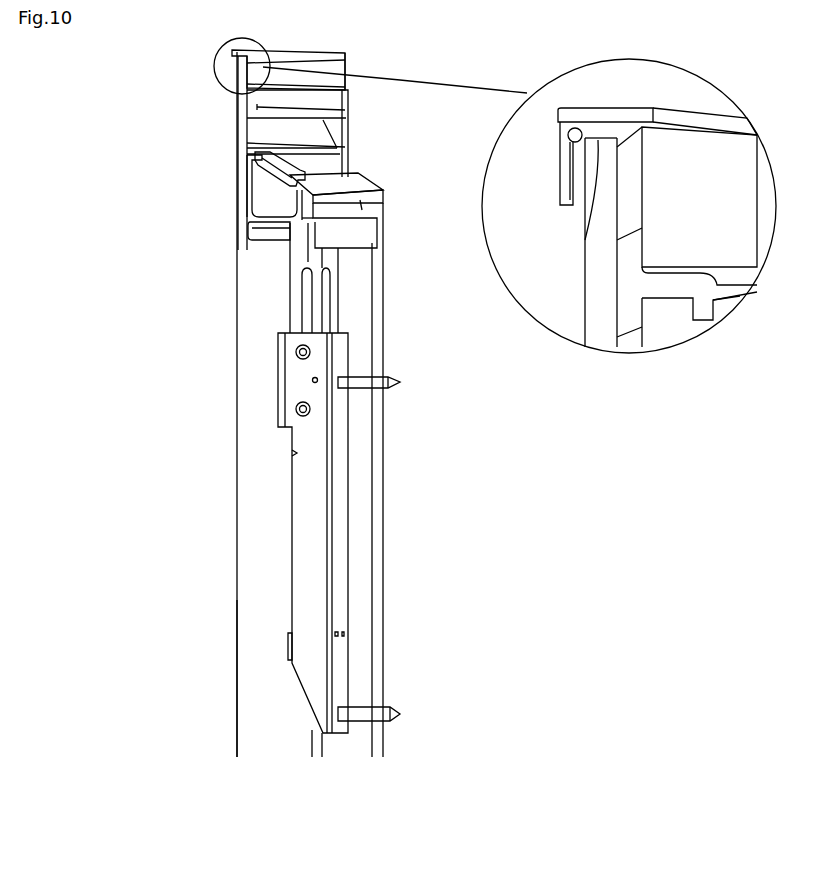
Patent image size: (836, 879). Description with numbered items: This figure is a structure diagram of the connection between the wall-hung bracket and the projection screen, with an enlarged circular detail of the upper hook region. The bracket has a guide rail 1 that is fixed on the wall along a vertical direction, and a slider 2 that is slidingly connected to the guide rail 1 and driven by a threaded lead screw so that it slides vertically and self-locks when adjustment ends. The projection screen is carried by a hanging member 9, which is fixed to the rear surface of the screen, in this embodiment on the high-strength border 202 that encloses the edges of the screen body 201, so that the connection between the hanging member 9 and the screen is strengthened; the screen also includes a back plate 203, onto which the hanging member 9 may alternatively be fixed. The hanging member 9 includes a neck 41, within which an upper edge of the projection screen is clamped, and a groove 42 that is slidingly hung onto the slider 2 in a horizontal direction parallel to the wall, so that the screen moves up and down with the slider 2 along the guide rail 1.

The guide rail 1 is at (313, 538).
The slider 2 is at (308, 260).
The hanging member 9 is at (162, 100).
The neck 41 is at (238, 80).
The groove 42 is at (277, 233).
The screen body 201 is at (265, 568).
The border 202 is at (232, 50).
The back plate 203 is at (260, 610).